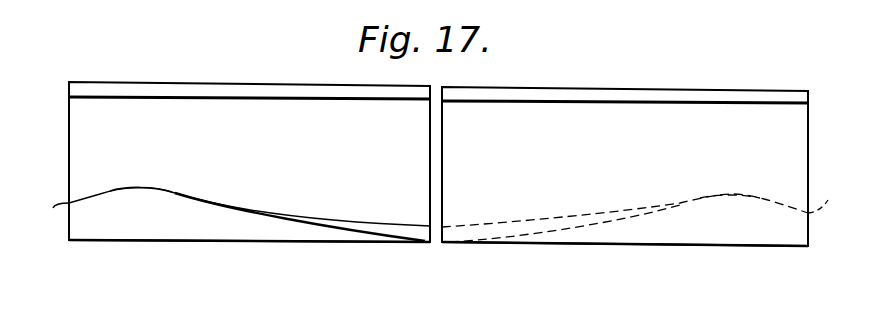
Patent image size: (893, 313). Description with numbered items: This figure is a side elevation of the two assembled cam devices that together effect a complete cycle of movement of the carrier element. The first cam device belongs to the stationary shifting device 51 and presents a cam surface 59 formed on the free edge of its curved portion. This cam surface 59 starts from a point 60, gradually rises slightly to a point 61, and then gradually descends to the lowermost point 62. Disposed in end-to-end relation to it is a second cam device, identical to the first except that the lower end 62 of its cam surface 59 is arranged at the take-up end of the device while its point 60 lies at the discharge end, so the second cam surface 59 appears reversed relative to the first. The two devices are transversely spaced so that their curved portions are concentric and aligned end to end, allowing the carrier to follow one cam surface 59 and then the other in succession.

The shifting device 51 is at (250, 232).
The cam surface 59 is at (94, 196).
The point 60 is at (443, 202).
The point 61 is at (143, 188).
The lowermost point 62 is at (422, 235).